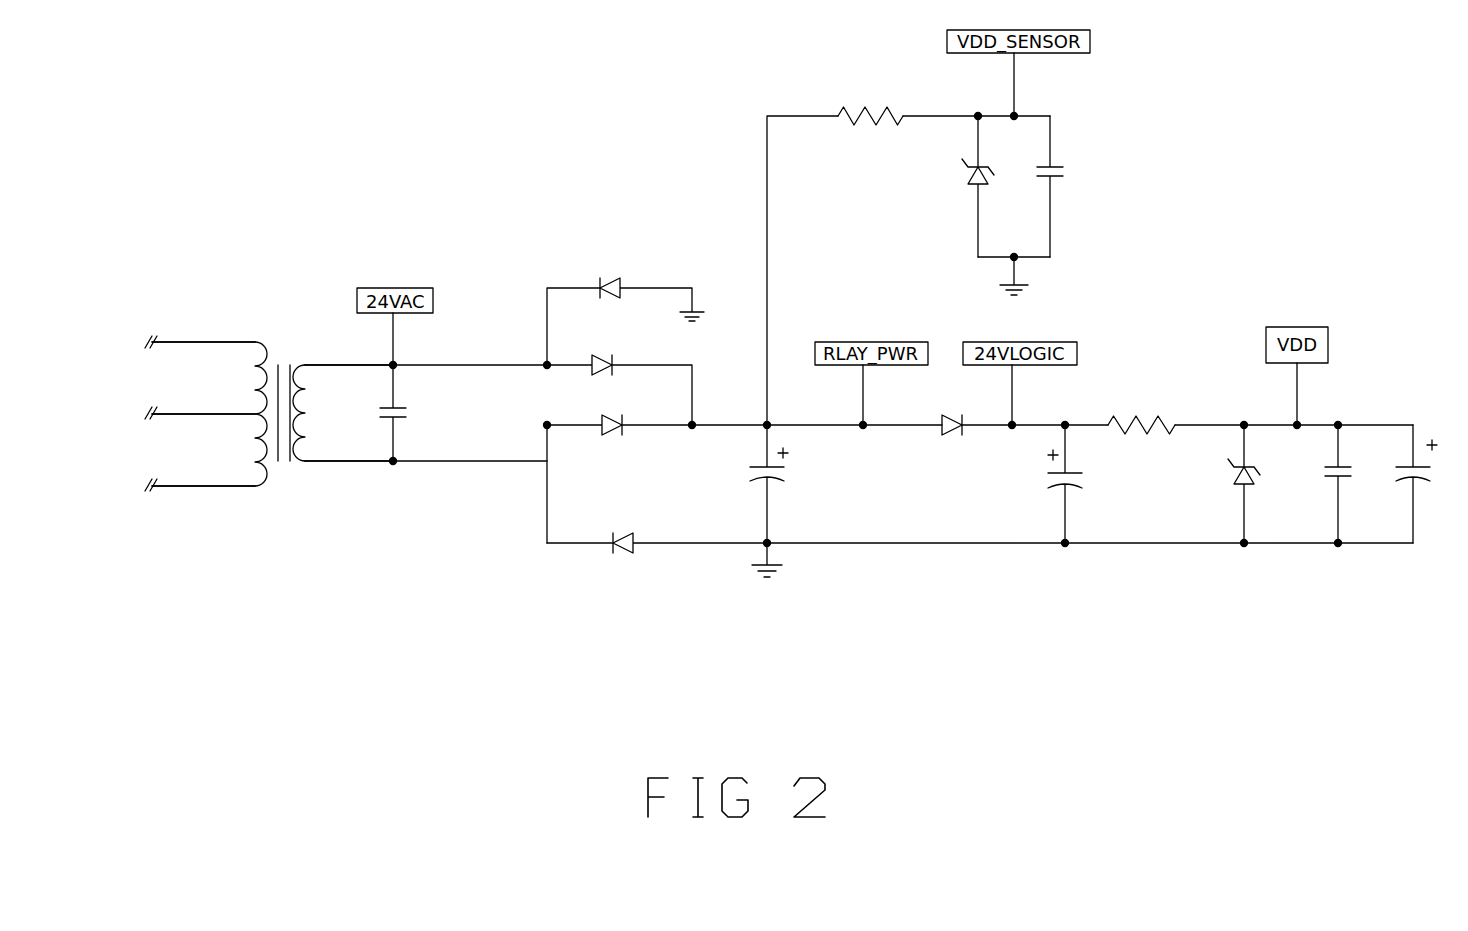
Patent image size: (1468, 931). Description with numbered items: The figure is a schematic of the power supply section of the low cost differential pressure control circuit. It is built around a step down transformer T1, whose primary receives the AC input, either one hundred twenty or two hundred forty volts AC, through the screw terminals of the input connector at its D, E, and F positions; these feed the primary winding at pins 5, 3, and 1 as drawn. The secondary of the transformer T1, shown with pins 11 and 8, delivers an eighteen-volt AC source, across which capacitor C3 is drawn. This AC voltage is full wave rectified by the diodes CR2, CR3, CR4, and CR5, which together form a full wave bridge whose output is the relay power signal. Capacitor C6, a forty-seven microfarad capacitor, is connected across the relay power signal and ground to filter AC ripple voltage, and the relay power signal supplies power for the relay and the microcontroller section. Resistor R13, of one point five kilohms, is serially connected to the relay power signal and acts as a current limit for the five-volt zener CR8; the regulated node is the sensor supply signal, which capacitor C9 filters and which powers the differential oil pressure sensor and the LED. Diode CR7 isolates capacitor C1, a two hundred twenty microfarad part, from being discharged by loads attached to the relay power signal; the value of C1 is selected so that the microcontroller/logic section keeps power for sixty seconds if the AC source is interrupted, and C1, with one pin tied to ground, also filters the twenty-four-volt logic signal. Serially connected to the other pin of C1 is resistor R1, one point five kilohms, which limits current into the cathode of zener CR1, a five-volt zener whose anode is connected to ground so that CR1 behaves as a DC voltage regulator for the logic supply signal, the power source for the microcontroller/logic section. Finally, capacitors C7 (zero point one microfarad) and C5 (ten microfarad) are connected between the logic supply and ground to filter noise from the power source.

The step down transformer T1 is at (346, 402).
The transformer primary pin 5 is at (203, 332).
The transformer primary pin 3 is at (203, 403).
The transformer primary pin 1 is at (203, 475).
The transformer secondary pin 11 is at (349, 354).
The transformer secondary pin 8 is at (349, 451).
The capacitor C3 is at (405, 413).
The diode CR2 is at (657, 436).
The diode CR3 is at (619, 381).
The diode CR4 is at (625, 312).
The diode CR5 is at (657, 531).
The capacitor C6 is at (781, 484).
The resistor R13 is at (870, 103).
The zener CR8 is at (957, 186).
The capacitor C9 is at (1064, 186).
The diode CR7 is at (950, 413).
The capacitor C1 is at (1049, 484).
The resistor R1 is at (1141, 410).
The zener CR1 is at (1225, 484).
The capacitor C7 is at (1330, 484).
The capacitor C5 is at (1422, 484).